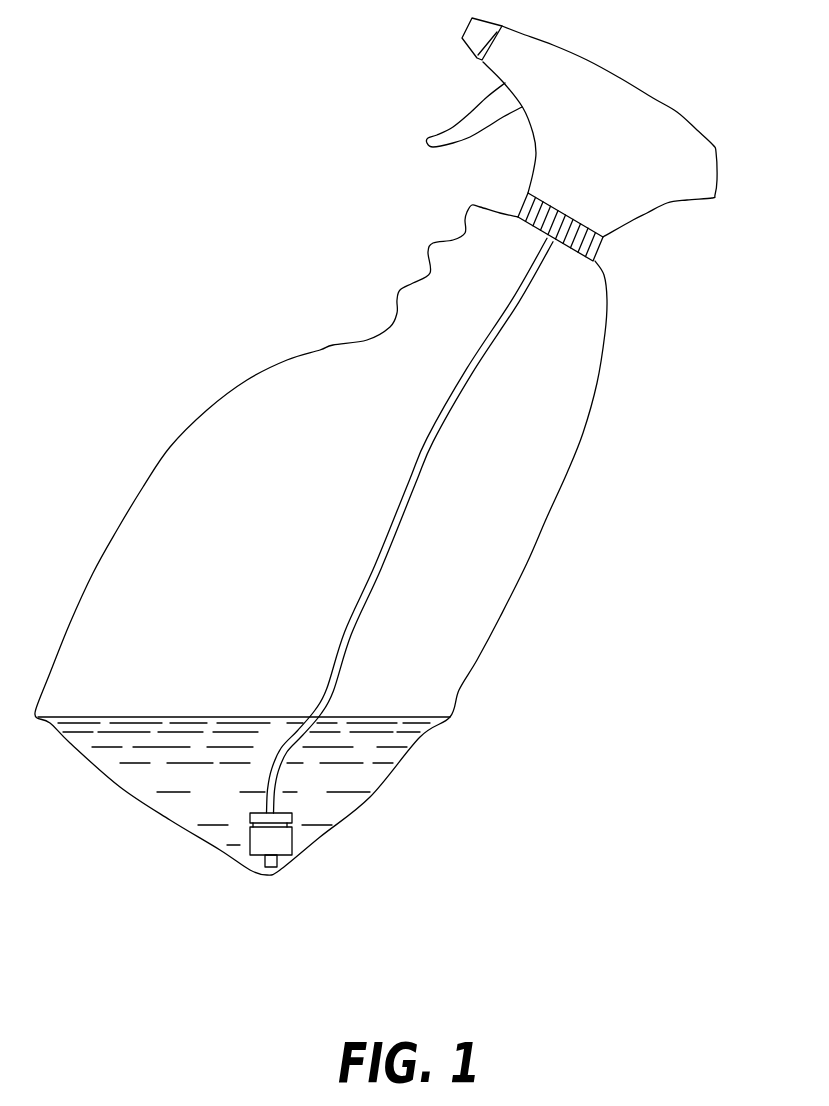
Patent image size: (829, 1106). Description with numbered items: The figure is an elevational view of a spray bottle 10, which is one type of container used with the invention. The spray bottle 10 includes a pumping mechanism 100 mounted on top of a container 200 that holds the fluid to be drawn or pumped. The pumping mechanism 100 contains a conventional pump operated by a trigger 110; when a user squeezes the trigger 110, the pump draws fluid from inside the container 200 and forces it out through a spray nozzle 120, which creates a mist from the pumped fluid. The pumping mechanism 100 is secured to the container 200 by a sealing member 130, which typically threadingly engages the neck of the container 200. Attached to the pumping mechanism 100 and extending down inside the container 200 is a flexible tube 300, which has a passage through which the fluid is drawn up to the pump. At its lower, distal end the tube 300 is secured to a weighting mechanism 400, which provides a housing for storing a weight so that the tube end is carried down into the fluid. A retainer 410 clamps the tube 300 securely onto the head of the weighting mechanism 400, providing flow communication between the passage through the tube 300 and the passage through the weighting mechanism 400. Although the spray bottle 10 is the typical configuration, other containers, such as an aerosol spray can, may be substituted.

The spray bottle 10 is at (646, 472).
The pumping mechanism 100 is at (657, 123).
The trigger 110 is at (458, 121).
The spray nozzle 120 is at (465, 26).
The sealing member 130 is at (604, 247).
The container 200 is at (447, 632).
The flexible tube 300 is at (415, 487).
The weighting mechanism 400 is at (250, 832).
The retainer 410 is at (287, 813).